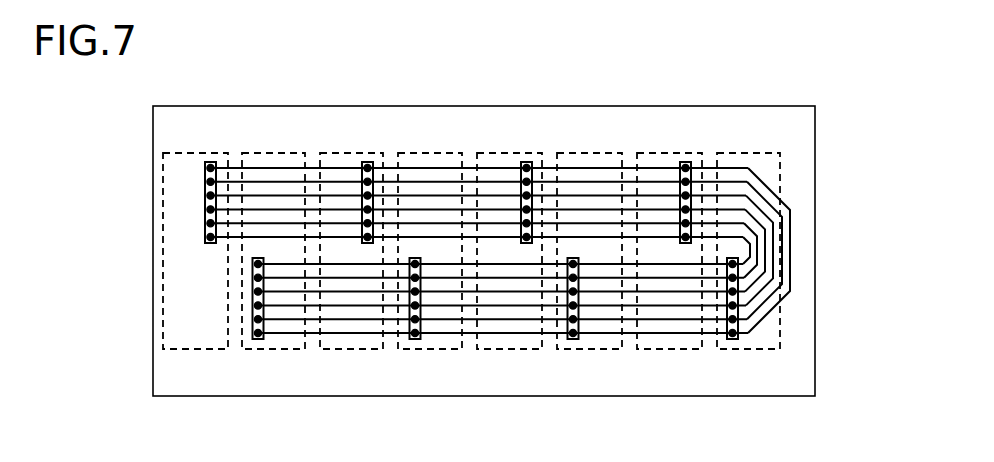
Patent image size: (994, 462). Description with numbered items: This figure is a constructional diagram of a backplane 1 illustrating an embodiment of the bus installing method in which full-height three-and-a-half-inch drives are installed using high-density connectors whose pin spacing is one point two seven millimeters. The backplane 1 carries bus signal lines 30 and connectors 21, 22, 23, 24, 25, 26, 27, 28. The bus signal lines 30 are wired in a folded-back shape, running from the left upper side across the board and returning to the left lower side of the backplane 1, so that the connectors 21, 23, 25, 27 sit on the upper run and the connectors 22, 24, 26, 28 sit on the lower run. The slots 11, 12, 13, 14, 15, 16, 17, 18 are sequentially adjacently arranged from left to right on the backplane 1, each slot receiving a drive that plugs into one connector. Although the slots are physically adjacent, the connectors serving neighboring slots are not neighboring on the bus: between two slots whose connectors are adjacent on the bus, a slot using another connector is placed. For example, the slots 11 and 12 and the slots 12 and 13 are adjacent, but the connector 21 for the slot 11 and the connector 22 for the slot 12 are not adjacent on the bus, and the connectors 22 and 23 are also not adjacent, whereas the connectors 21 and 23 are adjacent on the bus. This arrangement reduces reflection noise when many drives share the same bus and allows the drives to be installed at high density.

The backplane 1 is at (815, 333).
The slot 11 is at (205, 300).
The slot 12 is at (295, 199).
The slot 13 is at (361, 300).
The slot 14 is at (453, 199).
The slot 15 is at (519, 300).
The slot 16 is at (612, 199).
The slot 17 is at (678, 300).
The slot 18 is at (771, 199).
The connector 21 is at (244, 149).
The connector 22 is at (287, 347).
The connector 23 is at (402, 149).
The connector 24 is at (444, 347).
The connector 25 is at (561, 149).
The connector 26 is at (603, 347).
The connector 27 is at (720, 149).
The connector 28 is at (763, 347).
The bus signal lines 30 is at (793, 246).